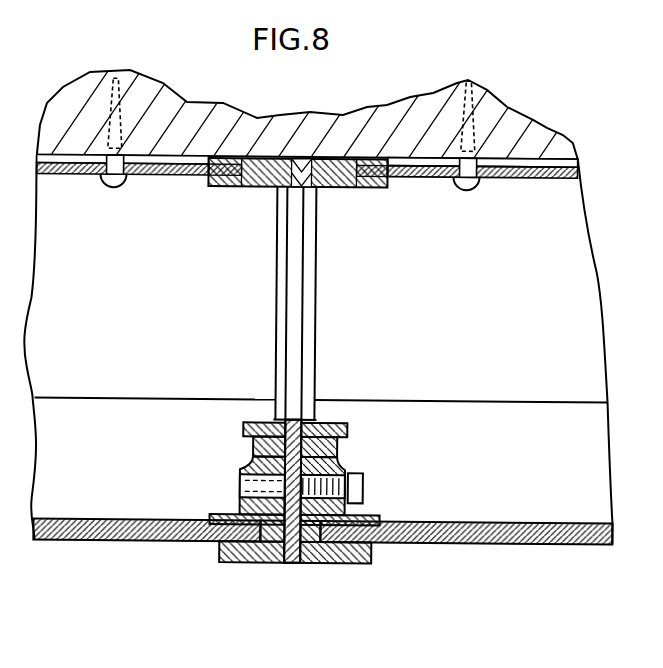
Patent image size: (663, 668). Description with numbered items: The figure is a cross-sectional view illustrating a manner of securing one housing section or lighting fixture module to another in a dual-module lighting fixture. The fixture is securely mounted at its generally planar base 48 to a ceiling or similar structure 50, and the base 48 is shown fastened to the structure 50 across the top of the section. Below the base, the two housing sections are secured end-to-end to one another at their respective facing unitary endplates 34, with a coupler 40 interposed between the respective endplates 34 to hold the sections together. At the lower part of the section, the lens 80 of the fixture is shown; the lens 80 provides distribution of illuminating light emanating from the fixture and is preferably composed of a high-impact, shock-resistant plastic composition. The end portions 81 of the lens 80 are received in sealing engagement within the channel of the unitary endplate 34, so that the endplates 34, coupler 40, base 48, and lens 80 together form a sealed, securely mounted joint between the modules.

The ceiling or similar structure 50 is at (253, 130).
The generally planar base 48 is at (157, 184).
The unitary endplate 34 is at (272, 232).
The coupler 40 is at (300, 310).
The lens 80 is at (93, 542).
The end portions of lens 81 is at (240, 565).